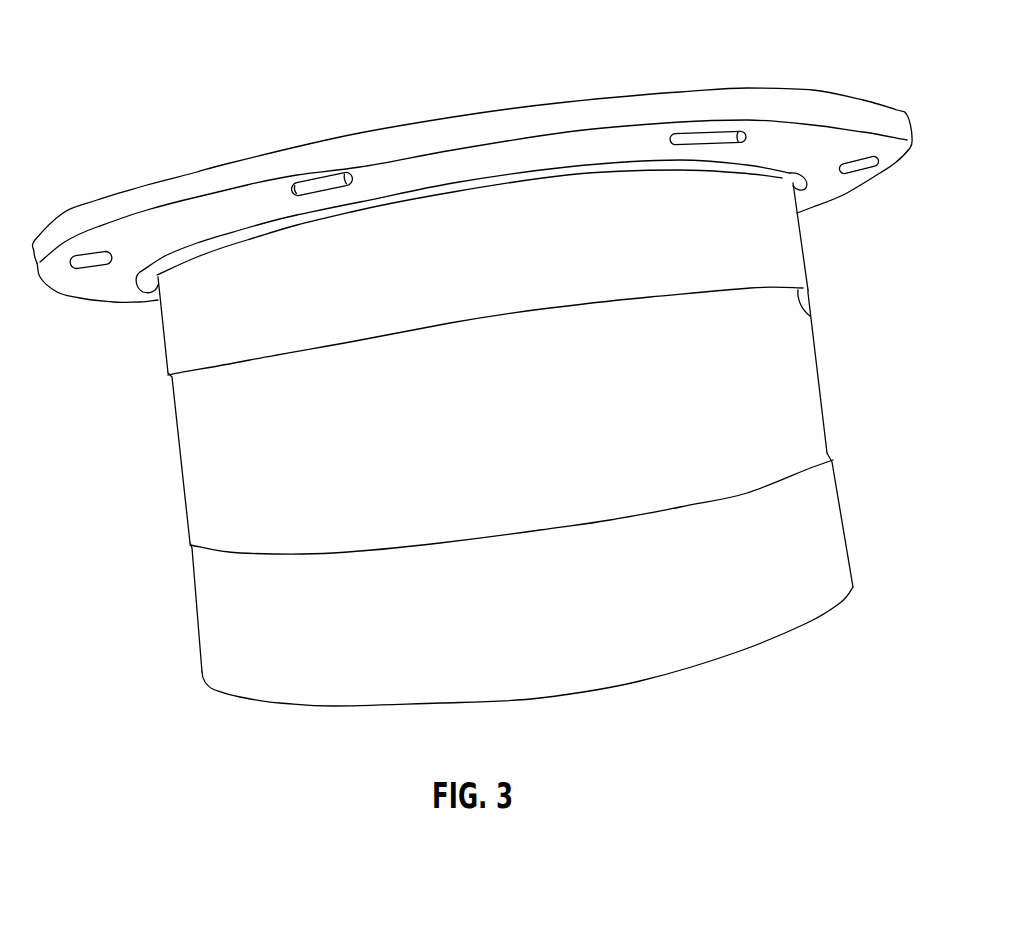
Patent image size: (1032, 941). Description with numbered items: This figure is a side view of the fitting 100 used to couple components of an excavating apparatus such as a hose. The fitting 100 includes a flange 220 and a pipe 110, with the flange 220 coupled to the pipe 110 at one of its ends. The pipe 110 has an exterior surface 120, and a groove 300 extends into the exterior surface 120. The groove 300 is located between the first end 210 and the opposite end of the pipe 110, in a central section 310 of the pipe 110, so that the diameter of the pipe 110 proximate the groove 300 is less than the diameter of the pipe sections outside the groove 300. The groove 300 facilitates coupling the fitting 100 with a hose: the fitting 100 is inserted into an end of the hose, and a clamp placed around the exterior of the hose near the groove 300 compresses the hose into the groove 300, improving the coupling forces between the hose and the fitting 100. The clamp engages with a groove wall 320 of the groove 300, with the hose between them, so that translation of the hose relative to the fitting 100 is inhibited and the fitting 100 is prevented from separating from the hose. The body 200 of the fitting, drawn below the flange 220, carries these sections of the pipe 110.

The fitting 100 is at (129, 71).
The first end 210 is at (418, 110).
The flange 220 is at (148, 188).
The cylindrical body 200 is at (802, 670).
The pipe 110 is at (175, 348).
The groove 300 is at (195, 457).
The central section 310 is at (818, 367).
The groove wall 320 is at (810, 315).
The exterior surface 120 is at (207, 608).